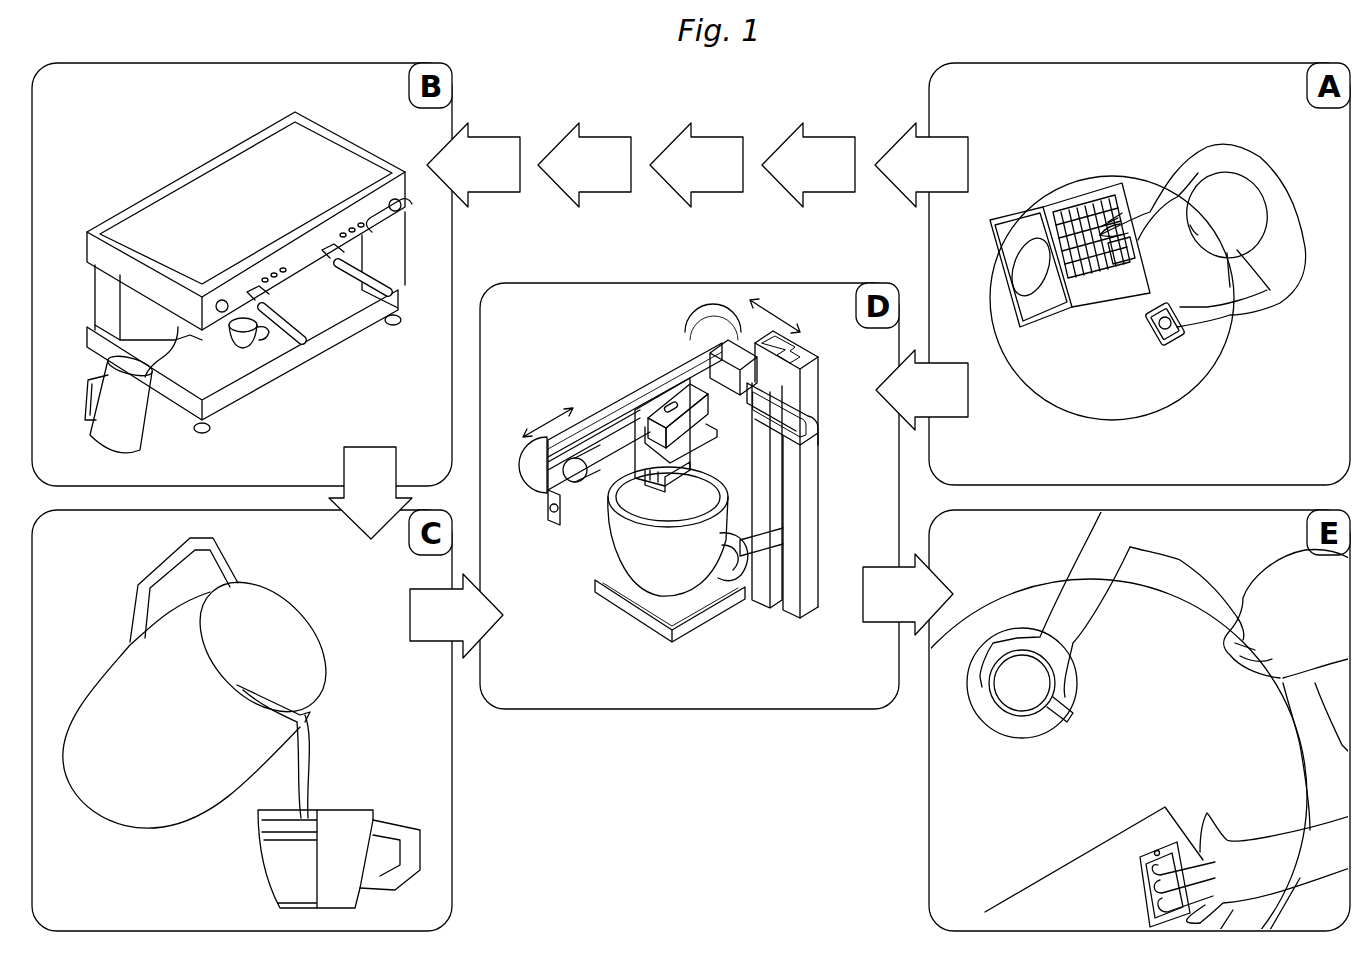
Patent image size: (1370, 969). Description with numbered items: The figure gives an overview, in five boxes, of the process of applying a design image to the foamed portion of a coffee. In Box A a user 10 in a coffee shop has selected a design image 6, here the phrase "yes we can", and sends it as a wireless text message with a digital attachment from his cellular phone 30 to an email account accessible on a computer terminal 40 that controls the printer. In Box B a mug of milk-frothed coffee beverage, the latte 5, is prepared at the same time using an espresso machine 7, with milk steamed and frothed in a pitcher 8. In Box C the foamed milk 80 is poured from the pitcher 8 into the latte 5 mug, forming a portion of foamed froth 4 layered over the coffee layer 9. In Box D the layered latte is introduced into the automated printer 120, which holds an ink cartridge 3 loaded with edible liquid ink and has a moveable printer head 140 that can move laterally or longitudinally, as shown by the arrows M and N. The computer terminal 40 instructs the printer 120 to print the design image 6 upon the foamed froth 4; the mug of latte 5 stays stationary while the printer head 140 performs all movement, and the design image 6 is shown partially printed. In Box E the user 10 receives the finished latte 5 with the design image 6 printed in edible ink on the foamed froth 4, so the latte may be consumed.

The ink cartridge 3 is at (687, 403).
The foamed froth 4 is at (295, 828).
The latte 5 is at (243, 343).
The design image 6 is at (633, 513).
The espresso machine 7 is at (152, 236).
The pitcher 8 is at (133, 418).
The coffee layer 9 is at (295, 887).
The user 10 is at (1233, 160).
The cellular phone 30 is at (1160, 343).
The computer terminal 40 is at (1115, 197).
The foamed milk 80 is at (303, 752).
The automated printer 120 is at (735, 643).
The moveable printer head 140 is at (637, 425).